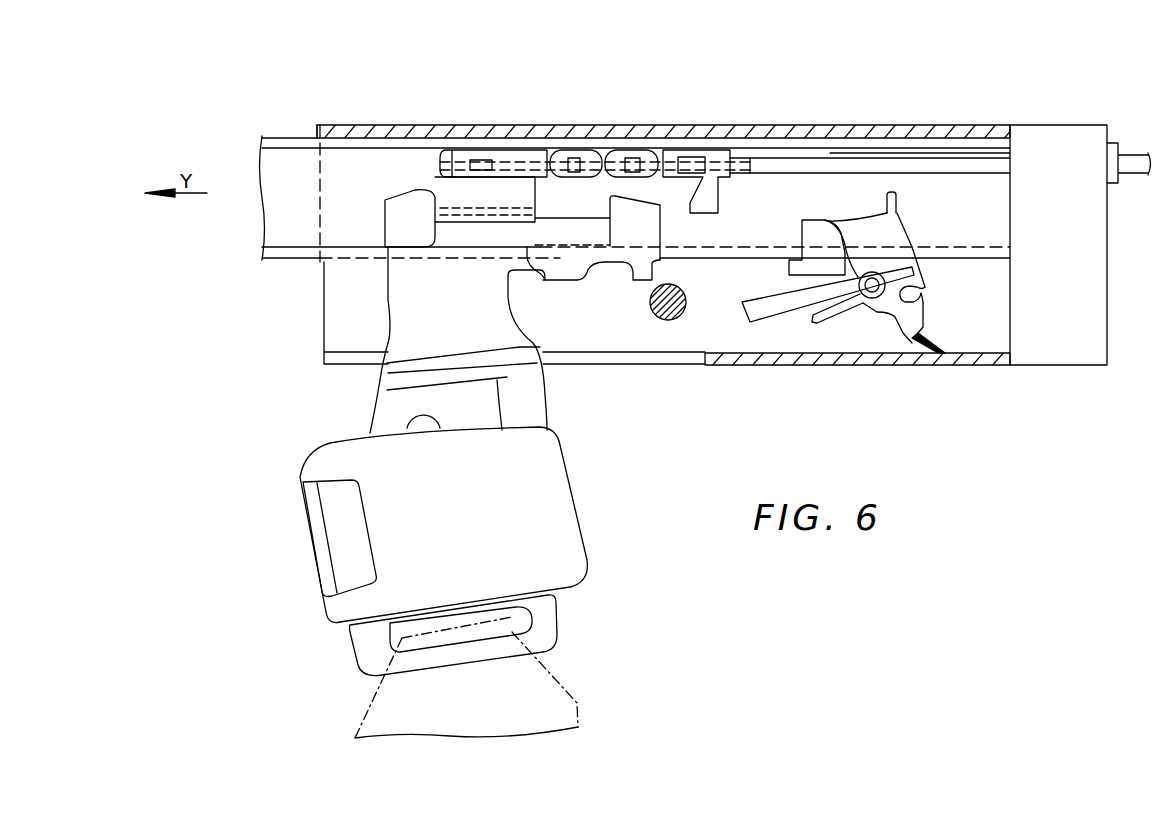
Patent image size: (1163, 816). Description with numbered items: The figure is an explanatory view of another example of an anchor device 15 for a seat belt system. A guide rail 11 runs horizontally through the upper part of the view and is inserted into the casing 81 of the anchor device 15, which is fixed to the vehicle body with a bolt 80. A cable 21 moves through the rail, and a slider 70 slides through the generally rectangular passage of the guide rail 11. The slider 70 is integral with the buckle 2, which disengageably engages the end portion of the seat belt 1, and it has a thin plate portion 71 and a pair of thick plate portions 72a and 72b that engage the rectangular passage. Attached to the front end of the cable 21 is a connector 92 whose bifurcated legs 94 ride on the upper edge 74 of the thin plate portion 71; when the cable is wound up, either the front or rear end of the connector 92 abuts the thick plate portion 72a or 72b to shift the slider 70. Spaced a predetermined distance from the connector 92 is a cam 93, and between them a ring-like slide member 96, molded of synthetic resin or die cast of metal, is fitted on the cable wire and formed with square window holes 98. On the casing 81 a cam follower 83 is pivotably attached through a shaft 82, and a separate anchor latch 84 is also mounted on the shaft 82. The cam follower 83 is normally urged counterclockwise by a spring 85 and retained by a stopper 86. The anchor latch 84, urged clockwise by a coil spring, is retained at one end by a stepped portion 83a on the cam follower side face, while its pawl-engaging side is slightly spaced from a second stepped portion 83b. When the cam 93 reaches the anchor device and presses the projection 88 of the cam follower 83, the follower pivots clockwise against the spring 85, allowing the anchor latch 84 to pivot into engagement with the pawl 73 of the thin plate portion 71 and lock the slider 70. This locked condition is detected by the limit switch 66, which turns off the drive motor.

The seat belt 1 is at (578, 716).
The buckle 2 is at (552, 540).
The guide rail 11 is at (292, 142).
The anchor device 15 is at (1052, 86).
The cable 21 is at (907, 163).
The limit switch 66 is at (1073, 238).
The slider 70 is at (360, 313).
The thin plate portion 71 is at (408, 332).
The thick plate portion 72a is at (393, 212).
The thick plate portion 72b is at (648, 228).
The pawl 73 is at (643, 273).
The upper edge 74 is at (574, 227).
The bolt 80 is at (685, 310).
The casing 81 is at (493, 125).
The shaft 82 is at (870, 296).
The cam follower 83 is at (893, 233).
The stepped portion 83a is at (925, 293).
The stepped portion 83b is at (813, 318).
The anchor latch 84 is at (763, 315).
The spring 85 is at (933, 355).
The stopper 86 is at (810, 232).
The projection 88 is at (893, 203).
The connector 92 is at (447, 188).
The cam 93 is at (712, 185).
The bifurcated legs 94 is at (540, 276).
The ring-like slide member 96 is at (640, 150).
The window holes 98 is at (572, 150).